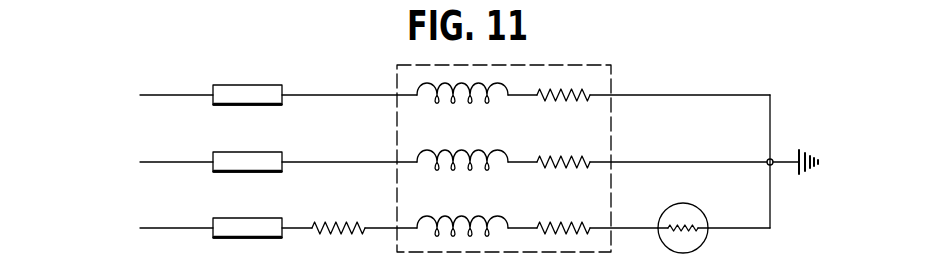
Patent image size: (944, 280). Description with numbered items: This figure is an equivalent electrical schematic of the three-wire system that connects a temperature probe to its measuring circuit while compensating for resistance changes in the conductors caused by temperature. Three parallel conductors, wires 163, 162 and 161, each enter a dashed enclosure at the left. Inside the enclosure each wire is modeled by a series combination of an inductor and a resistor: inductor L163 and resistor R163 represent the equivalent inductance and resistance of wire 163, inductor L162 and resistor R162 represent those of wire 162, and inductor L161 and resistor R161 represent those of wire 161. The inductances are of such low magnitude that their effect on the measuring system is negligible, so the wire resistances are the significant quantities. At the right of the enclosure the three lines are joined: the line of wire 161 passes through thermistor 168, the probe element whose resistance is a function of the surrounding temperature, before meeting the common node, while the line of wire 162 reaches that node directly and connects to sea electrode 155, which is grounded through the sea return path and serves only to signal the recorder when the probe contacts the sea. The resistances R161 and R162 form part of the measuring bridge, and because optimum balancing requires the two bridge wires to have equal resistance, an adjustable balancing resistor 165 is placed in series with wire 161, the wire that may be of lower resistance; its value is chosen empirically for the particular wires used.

The wire 163 is at (254, 96).
The wire 162 is at (254, 163).
The wire 161 is at (201, 229).
The adjustable balancing resistor 165 is at (333, 236).
The thermistor 168 is at (701, 246).
The sea electrode 155 is at (799, 150).
The inductor L163 is at (487, 104).
The inductor L162 is at (487, 171).
The inductor L161 is at (487, 237).
The resistor R163 is at (591, 98).
The resistor R162 is at (591, 165).
The resistor R161 is at (538, 230).